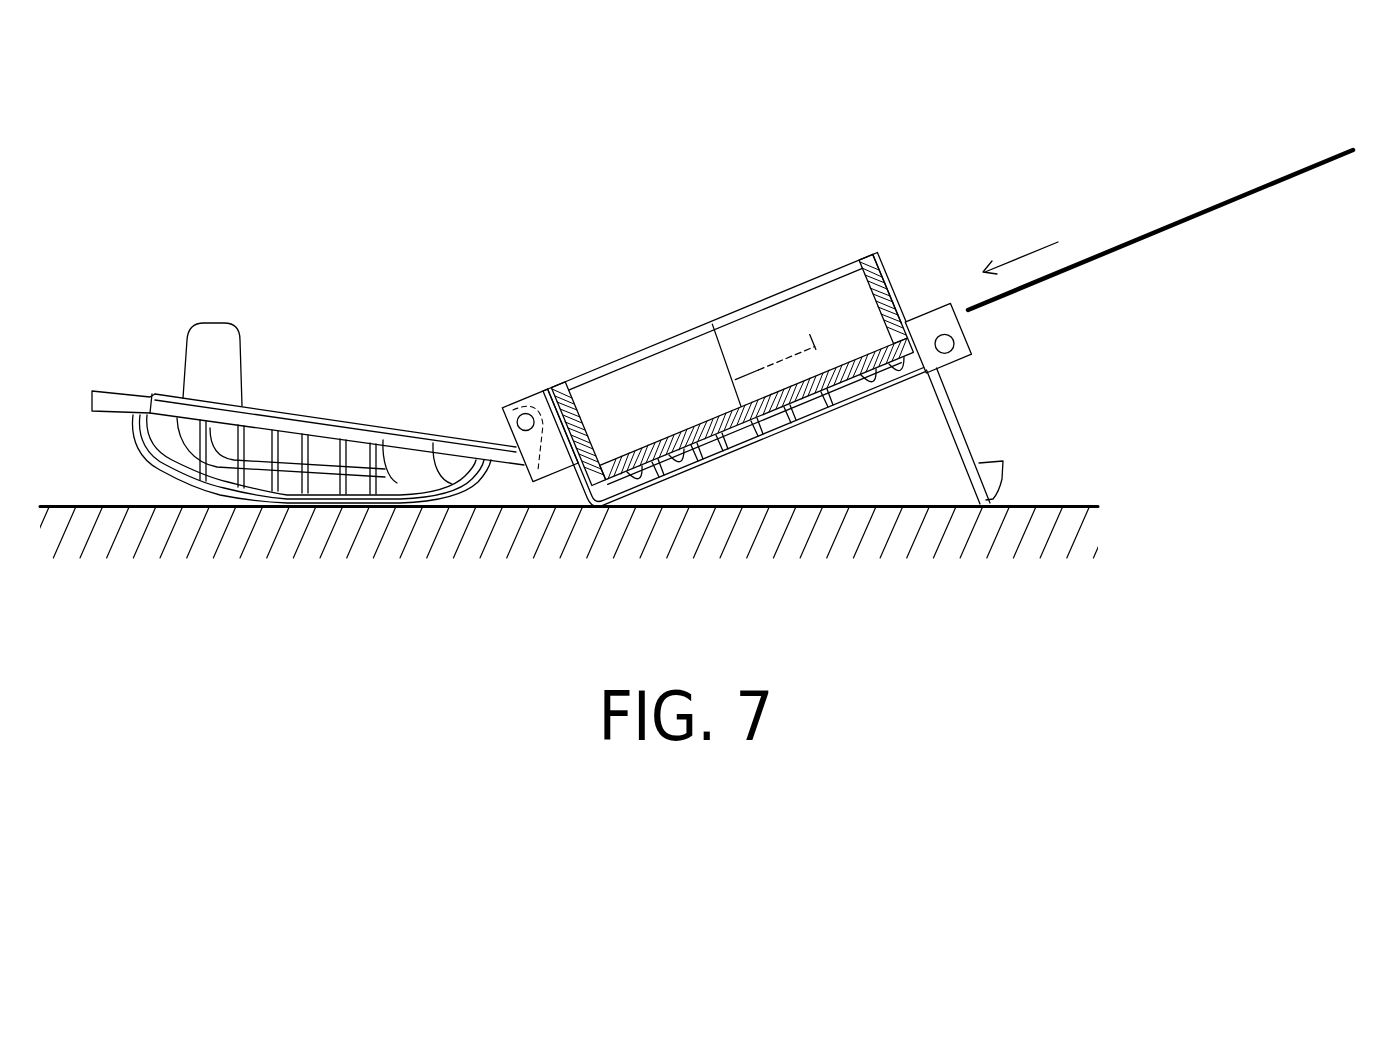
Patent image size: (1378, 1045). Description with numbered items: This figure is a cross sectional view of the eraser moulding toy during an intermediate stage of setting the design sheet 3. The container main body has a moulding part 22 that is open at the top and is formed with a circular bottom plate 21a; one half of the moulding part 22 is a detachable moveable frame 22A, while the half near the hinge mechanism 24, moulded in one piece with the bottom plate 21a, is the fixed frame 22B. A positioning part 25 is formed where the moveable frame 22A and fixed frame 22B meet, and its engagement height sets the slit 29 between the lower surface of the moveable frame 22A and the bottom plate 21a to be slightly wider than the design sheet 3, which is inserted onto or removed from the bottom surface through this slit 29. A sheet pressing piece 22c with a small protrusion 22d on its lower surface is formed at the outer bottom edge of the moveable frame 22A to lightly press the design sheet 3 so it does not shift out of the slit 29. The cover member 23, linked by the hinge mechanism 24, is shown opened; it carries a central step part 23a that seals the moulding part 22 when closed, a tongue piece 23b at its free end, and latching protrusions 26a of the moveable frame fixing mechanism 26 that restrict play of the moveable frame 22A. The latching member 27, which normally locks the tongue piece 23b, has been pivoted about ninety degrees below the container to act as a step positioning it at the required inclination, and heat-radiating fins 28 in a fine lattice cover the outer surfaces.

The design sheet 3 is at (1230, 200).
The bottom plate 21a is at (647, 432).
The moulding part 22 is at (749, 318).
The moveable frame 22A is at (848, 290).
The fixed frame 22B is at (597, 397).
The sheet pressing piece 22c is at (927, 307).
The small protrusion 22d is at (963, 330).
The cover member 23 is at (303, 400).
The step part 23a is at (378, 420).
The tongue piece 23b is at (110, 390).
The hinge mechanism 24 is at (520, 398).
The positioning part 25 is at (755, 372).
The moveable frame fixing mechanism 26 is at (250, 318).
The latching protrusions 26a is at (218, 327).
The latching member 27 is at (980, 431).
The heat-radiating fins 28 is at (147, 438).
The slit 29 is at (852, 353).